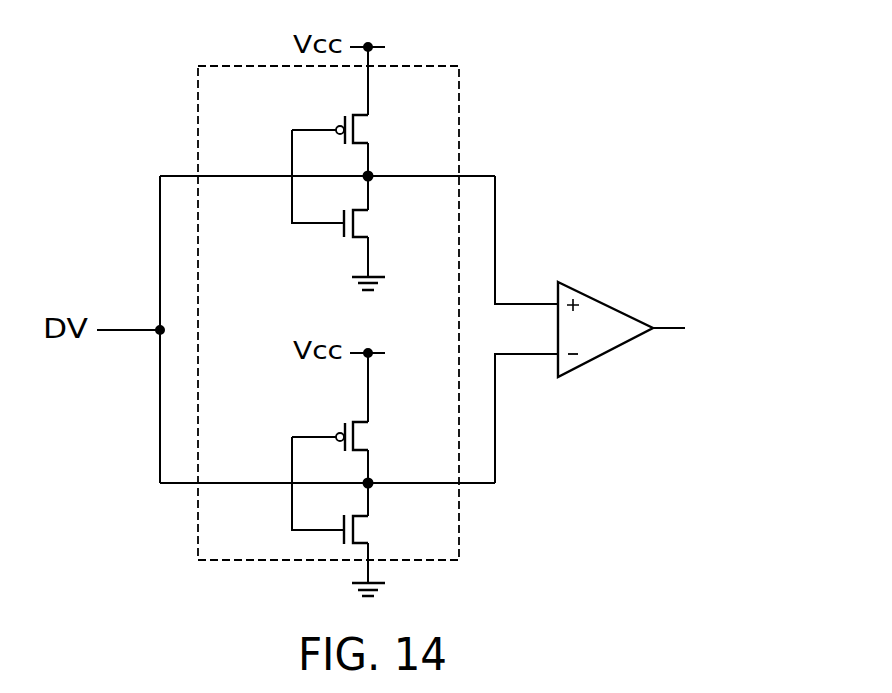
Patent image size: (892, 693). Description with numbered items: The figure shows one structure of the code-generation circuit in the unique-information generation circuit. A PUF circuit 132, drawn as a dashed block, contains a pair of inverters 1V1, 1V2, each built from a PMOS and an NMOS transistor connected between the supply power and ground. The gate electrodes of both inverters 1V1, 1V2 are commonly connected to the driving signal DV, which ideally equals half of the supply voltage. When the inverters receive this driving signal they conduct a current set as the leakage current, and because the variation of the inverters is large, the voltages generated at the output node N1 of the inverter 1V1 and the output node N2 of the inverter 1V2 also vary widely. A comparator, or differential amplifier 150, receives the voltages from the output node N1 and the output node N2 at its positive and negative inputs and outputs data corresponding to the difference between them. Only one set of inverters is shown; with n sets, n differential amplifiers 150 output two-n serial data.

The PUF circuit 132 is at (460, 92).
The inverter 1V1 is at (280, 153).
The inverter 1V2 is at (280, 460).
The output node N1 is at (369, 176).
The output node N2 is at (369, 483).
The comparator (differential amplifier) 150 is at (605, 304).